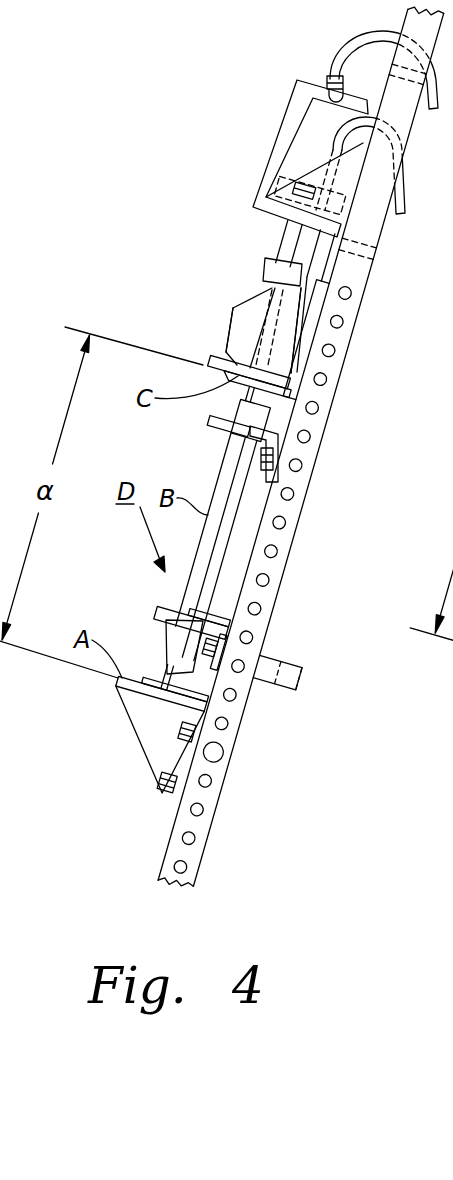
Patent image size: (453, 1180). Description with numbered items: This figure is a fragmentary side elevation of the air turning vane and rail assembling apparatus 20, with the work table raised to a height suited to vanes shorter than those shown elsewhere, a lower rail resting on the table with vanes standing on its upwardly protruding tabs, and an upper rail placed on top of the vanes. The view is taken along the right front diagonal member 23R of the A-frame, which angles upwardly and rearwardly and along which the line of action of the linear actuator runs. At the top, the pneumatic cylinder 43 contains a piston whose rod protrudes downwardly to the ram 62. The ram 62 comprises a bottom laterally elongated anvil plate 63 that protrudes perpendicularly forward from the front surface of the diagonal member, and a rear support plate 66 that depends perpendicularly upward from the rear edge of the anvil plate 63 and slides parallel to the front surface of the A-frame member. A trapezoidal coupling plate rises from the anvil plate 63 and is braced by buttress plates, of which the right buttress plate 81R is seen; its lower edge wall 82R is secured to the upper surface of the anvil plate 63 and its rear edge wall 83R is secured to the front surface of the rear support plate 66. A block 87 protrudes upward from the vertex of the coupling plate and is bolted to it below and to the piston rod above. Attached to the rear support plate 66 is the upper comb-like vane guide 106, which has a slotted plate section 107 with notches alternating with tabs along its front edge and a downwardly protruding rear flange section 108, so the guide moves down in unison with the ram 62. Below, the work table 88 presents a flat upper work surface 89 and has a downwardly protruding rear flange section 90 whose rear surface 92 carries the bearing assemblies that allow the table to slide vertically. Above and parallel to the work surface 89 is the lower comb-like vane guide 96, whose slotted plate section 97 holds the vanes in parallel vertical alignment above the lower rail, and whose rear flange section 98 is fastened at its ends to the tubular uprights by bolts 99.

The air turning vane and rail assembling apparatus 20 is at (253, 157).
The cylinder 43 is at (296, 92).
The ram 62 is at (246, 308).
The block 87 is at (232, 335).
The anvil plate 63 is at (211, 363).
The upper vane guide 106 is at (207, 424).
The slotted plate section 107 is at (282, 440).
The rear flange section 108 is at (272, 462).
The rear support plate 66 is at (318, 305).
The rear edge wall 83R is at (306, 330).
The buttress plate 81R is at (290, 352).
The lower edge wall 82R is at (285, 402).
The front diagonal member 23R is at (292, 538).
The slotted plate section 97 is at (165, 603).
The lower vane guide 96 is at (158, 612).
The rear flange section 98 is at (228, 642).
The bolts 99 is at (218, 662).
The upper work surface 89 is at (115, 686).
The work table 88 is at (148, 700).
The rear surface 92 is at (236, 745).
The flange section 90 is at (192, 772).